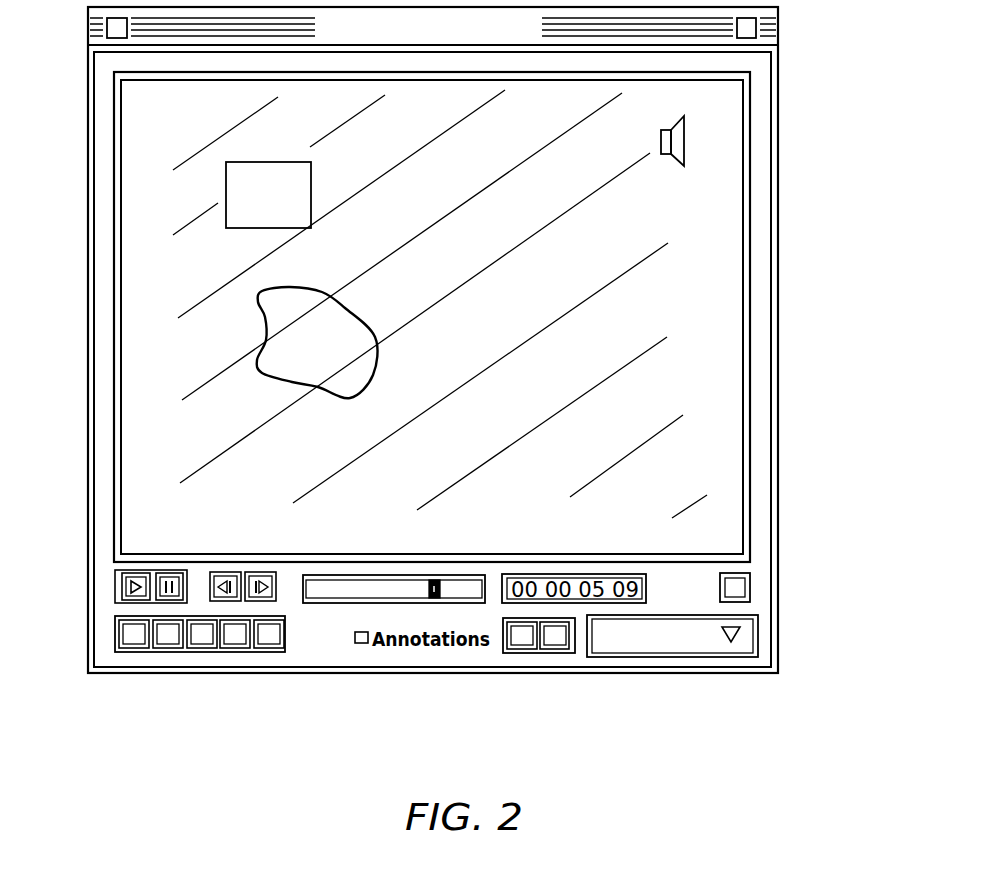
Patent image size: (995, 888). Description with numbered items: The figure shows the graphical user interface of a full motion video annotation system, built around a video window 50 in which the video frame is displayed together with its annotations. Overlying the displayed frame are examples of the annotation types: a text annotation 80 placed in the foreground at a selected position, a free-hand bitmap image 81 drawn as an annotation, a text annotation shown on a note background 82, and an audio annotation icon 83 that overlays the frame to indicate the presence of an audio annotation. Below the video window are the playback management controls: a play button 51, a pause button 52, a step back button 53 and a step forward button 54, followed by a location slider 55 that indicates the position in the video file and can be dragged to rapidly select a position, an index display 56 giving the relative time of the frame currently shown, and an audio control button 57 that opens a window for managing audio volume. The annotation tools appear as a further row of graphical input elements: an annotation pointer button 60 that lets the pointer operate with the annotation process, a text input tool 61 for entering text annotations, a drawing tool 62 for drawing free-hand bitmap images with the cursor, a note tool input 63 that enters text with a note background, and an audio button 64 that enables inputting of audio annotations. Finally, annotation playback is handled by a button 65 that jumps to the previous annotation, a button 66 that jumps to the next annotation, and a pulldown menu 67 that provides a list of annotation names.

The video window 50 is at (475, 340).
The play button 51 is at (85, 561).
The pause button 52 is at (116, 645).
The step back button 53 is at (296, 654).
The step forward button 54 is at (325, 639).
The location slider 55 is at (394, 564).
The index display 56 is at (490, 317).
The audio control button 57 is at (746, 587).
The annotation pointer button 60 is at (169, 688).
The text input tool 61 is at (149, 670).
The drawing tool 62 is at (179, 688).
The note tool input 63 is at (246, 690).
The audio button 64 is at (285, 680).
The previous annotation button 65 is at (514, 676).
The next annotation button 66 is at (583, 676).
The pulldown menu 67 is at (691, 677).
The text annotation 80 is at (613, 250).
The free-hand bitmap image 81 is at (341, 337).
The note background 82 is at (277, 166).
The audio annotation icon 83 is at (759, 134).